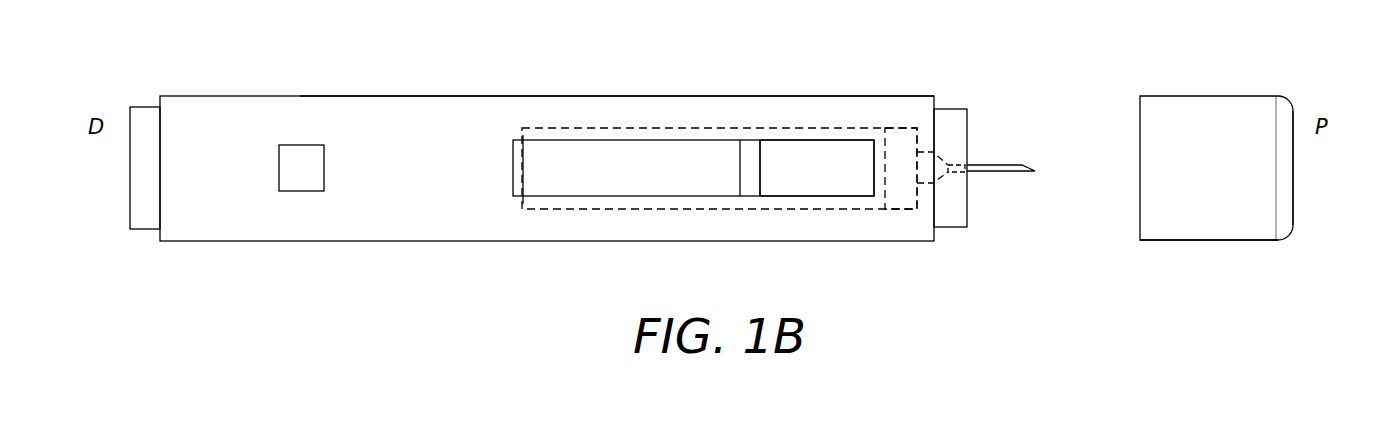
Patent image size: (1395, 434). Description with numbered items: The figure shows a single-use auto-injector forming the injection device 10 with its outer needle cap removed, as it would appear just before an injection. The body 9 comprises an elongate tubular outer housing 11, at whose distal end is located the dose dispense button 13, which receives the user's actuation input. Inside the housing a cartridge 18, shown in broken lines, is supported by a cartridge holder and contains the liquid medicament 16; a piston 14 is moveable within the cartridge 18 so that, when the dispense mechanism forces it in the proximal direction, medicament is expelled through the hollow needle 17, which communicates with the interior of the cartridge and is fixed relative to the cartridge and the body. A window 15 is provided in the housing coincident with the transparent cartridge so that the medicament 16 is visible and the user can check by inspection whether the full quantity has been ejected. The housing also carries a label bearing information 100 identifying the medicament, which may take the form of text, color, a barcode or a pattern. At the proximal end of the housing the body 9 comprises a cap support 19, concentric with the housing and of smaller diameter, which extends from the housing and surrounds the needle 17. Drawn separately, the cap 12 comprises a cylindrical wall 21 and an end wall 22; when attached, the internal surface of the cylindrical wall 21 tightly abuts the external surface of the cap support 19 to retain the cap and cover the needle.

The body 9 is at (438, 96).
The injection device 10 is at (893, 56).
The outer housing 11 is at (745, 103).
The cap 12 is at (1208, 105).
The dose dispense button 13 is at (140, 166).
The piston 14 is at (751, 188).
The window 15 is at (582, 140).
The liquid medicament 16 is at (803, 188).
The hollow needle 17 is at (1008, 165).
The cartridge 18 is at (600, 211).
The cap support 19 is at (957, 118).
The cylindrical wall 21 is at (1228, 241).
The end wall 22 is at (1293, 167).
The information 100 is at (300, 145).